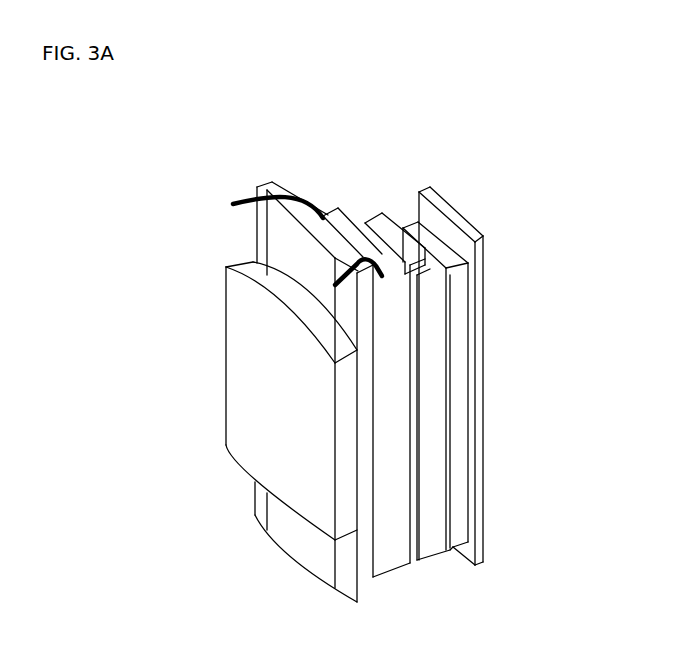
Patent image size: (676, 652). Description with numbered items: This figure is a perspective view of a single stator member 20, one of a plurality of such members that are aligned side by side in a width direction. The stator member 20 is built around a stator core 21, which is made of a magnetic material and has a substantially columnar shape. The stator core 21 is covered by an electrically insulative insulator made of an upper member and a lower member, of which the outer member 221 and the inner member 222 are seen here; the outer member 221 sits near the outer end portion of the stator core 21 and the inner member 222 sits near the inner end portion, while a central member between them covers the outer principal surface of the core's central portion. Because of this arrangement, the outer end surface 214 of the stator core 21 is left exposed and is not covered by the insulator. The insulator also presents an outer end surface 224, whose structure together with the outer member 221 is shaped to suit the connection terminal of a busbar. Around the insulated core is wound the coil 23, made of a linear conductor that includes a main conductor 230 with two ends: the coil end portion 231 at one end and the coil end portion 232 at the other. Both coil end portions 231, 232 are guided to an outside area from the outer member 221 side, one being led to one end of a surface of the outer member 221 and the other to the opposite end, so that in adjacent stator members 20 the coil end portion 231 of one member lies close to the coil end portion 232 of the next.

The stator member 20 is at (509, 122).
The stator core 21 is at (240, 342).
The outer end surface 214 is at (246, 413).
The outer end surface 224 is at (298, 560).
The outer member 221 is at (365, 585).
The inner member 222 is at (470, 548).
The coil 23 is at (415, 128).
The main conductor 230 is at (373, 223).
The coil end portion 231 is at (365, 262).
The coil end portion 232 is at (293, 193).